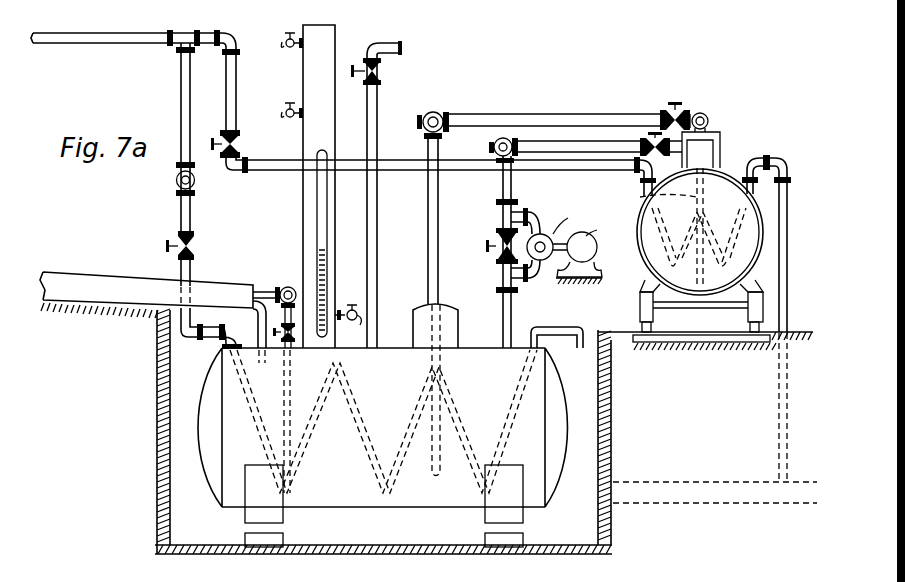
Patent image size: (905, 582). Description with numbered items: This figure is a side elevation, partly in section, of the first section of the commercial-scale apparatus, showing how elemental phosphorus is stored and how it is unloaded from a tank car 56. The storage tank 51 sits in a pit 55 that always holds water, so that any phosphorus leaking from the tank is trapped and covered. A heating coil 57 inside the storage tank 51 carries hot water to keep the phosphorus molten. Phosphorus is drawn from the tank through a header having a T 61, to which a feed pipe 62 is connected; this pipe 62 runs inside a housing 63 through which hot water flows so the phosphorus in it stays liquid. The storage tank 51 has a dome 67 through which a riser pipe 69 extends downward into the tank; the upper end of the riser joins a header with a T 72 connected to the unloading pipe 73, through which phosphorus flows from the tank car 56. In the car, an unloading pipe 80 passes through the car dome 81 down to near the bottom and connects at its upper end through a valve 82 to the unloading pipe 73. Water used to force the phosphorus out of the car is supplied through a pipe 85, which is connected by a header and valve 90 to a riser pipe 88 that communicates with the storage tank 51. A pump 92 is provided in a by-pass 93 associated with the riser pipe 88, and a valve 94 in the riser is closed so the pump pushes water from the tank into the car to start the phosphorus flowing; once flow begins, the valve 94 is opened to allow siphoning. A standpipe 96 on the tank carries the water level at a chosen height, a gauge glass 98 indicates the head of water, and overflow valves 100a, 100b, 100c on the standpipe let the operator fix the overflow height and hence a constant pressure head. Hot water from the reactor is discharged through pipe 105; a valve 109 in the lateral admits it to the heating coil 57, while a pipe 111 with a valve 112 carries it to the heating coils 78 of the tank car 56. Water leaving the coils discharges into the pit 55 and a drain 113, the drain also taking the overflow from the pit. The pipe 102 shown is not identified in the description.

The pipe 105 is at (125, 33).
The overflow valve 100c is at (283, 40).
The overflow valve 100b is at (283, 114).
The overflow valve 100a is at (362, 300).
The standpipe 96 is at (305, 72).
The gauge glass 98 is at (322, 235).
The pipe 111 is at (224, 103).
The valve 112 is at (224, 134).
The vent pipe 102 is at (356, 66).
The T 72 is at (444, 116).
The pipe 73 is at (511, 121).
The valve 82 is at (675, 102).
The dome 81 is at (722, 137).
The pipe 85 is at (588, 144).
The valve 90 is at (489, 148).
The riser pipe 88 is at (503, 313).
The valve 94 is at (490, 250).
The by-pass 93 is at (535, 220).
The pump 92 is at (553, 265).
The unloading pipe 80 is at (657, 183).
The tank car 56 is at (722, 172).
The heating coils 78 is at (748, 233).
The drain 113 is at (755, 455).
The housing 63 is at (123, 282).
The pipe 62 is at (263, 290).
The T 61 is at (288, 287).
The dome 67 is at (430, 306).
The storage tank 51 is at (390, 378).
The riser pipe 69 is at (440, 363).
The heating coil 57 is at (372, 463).
The pit 55 is at (180, 450).
The valve 109 is at (166, 240).